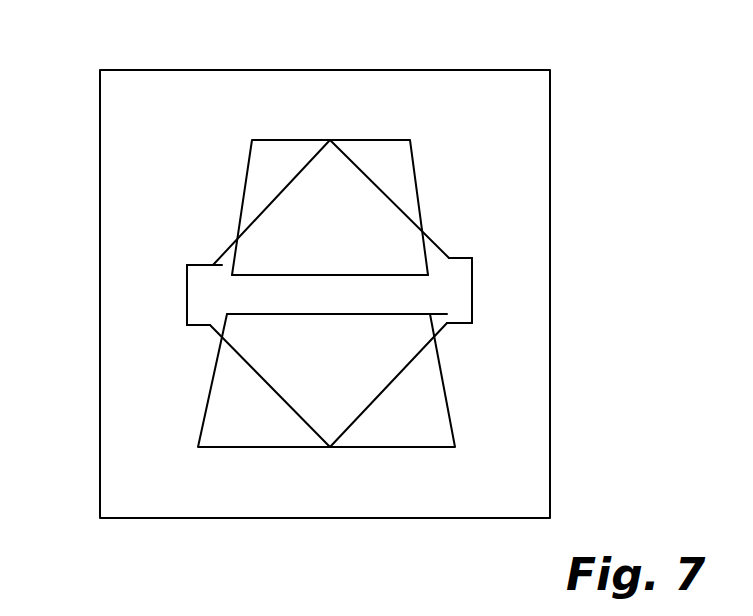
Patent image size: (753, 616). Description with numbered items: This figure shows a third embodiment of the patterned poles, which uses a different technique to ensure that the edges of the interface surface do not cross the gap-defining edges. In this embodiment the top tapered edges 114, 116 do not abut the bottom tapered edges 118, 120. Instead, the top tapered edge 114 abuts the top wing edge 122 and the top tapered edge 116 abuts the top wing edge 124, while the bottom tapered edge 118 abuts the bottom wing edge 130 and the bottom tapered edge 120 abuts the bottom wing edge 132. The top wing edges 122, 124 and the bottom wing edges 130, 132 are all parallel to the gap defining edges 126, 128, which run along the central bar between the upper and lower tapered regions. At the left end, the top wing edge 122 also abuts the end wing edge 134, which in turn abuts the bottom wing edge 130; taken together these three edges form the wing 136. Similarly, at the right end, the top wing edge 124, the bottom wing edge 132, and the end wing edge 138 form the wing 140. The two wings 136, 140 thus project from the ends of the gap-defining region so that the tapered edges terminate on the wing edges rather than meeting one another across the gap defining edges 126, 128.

The top tapered edge 114 is at (298, 170).
The top tapered edge 116 is at (360, 170).
The bottom tapered edge 118 is at (287, 402).
The bottom tapered edge 120 is at (368, 412).
The top wing edge 122 is at (197, 262).
The top wing edge 124 is at (462, 253).
The gap defining edge 126 is at (183, 267).
The gap defining edge 128 is at (440, 313).
The bottom wing edge 130 is at (197, 327).
The bottom wing edge 132 is at (462, 328).
The end wing edge 134 is at (184, 292).
The wing 136 is at (172, 313).
The end wing edge 138 is at (473, 277).
The wing 140 is at (482, 298).